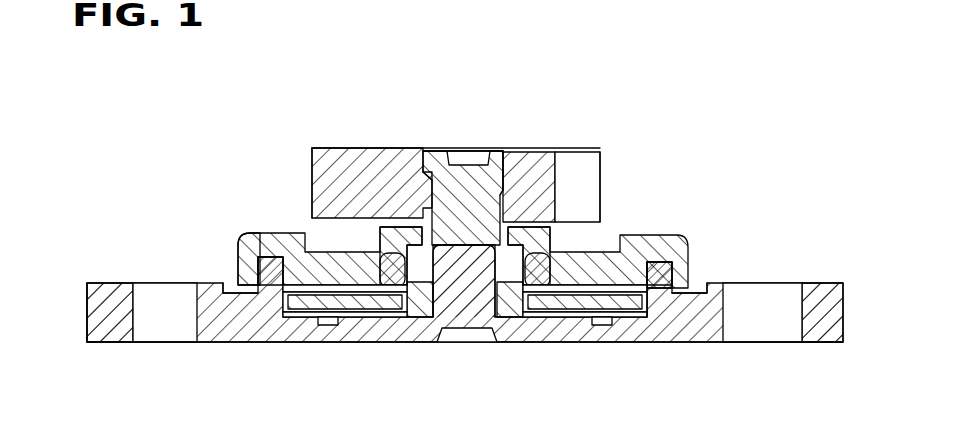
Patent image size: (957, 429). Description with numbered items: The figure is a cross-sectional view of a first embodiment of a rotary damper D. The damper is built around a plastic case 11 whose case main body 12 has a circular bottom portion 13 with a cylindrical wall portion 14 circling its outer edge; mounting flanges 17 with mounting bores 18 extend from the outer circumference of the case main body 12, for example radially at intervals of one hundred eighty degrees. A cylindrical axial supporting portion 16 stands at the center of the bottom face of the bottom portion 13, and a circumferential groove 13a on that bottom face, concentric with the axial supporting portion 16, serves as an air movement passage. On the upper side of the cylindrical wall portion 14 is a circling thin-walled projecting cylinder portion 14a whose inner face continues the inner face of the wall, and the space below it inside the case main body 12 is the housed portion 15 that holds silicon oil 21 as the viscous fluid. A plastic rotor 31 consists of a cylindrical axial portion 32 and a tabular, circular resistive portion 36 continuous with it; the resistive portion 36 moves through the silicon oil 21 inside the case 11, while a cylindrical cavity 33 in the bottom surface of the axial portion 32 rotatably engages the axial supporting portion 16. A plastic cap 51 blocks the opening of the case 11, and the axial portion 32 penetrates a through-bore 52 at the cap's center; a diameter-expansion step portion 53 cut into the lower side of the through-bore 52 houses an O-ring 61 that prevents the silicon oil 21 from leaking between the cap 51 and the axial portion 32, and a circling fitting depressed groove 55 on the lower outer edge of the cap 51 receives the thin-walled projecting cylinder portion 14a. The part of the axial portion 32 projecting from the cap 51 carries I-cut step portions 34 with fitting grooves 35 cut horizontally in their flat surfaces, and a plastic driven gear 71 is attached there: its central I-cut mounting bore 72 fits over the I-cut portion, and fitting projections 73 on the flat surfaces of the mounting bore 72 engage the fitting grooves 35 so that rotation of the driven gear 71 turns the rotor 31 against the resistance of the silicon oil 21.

The case 11 is at (823, 275).
The case main body 12 is at (268, 347).
The bottom portion 13 is at (530, 318).
The circumferential groove 13a is at (330, 320).
The cylindrical wall portion 14 is at (248, 330).
The thin-walled projecting cylinder portion 14a is at (245, 283).
The housed portion 15 is at (655, 320).
The axial supporting portion 16 is at (473, 343).
The mounting flange 17 is at (108, 313).
The mounting bore 18 is at (172, 343).
The silicon oil 21 is at (575, 315).
The rotor 31 is at (547, 85).
The axial portion 32 is at (466, 150).
The cylindrical cavity 33 is at (445, 300).
The I-cut step portion 34 is at (585, 153).
The fitting groove 35 is at (460, 165).
The resistive portion 36 is at (372, 343).
The cap 51 is at (240, 248).
The through-bore 52 is at (385, 228).
The diameter-expansion step portion 53 is at (380, 240).
The fitting depressed groove 55 is at (258, 250).
The O-ring 61 is at (590, 268).
The driven gear 71 is at (603, 162).
The mounting bore 72 is at (432, 165).
The fitting projection 73 is at (420, 165).
The rotary damper D is at (635, 167).